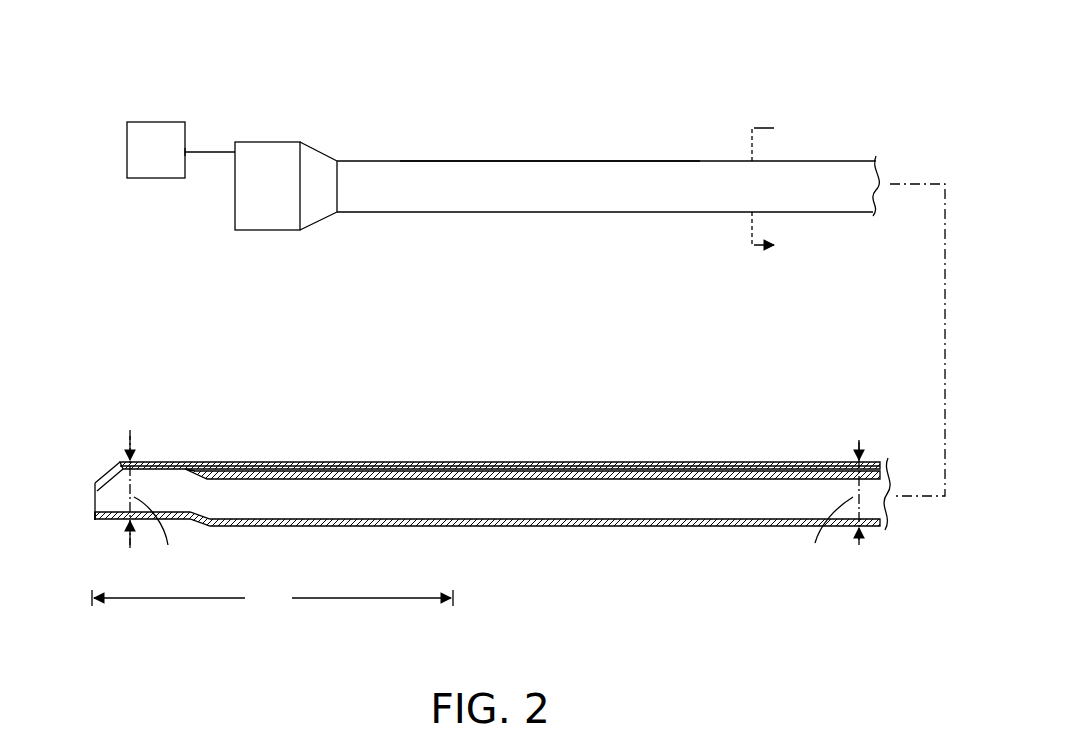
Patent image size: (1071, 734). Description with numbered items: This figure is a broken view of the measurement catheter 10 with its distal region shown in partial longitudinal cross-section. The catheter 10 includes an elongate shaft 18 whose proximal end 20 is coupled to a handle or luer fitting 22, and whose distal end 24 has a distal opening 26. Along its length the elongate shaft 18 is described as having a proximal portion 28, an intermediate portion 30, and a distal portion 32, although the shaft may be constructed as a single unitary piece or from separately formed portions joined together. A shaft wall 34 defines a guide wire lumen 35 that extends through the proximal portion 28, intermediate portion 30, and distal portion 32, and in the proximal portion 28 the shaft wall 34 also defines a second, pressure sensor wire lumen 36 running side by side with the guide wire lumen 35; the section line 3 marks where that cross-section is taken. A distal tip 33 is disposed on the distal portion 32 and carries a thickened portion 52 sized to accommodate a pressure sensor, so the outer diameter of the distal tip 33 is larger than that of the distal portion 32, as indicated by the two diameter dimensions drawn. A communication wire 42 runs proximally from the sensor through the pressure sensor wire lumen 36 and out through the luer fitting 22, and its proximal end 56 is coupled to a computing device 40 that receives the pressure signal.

The measurement catheter 10 is at (503, 150).
The elongate shaft 18 is at (578, 213).
The proximal end 20 is at (337, 214).
The luer fitting 22 is at (290, 141).
The proximal portion 28 is at (514, 158).
The computing device 40 is at (155, 122).
The communication wire 42 is at (215, 150).
The proximal end of communication wire 56 is at (186, 149).
The line 3- 3 is at (773, 187).
The distal end 24 is at (96, 521).
The distal opening 26 is at (95, 486).
The intermediate portion 30 is at (459, 483).
The distal portion 32 is at (459, 466).
The distal tip 33 is at (152, 458).
The shaft wall 34 is at (528, 527).
The guide wire lumen 35 is at (318, 498).
The pressure sensor wire lumen 36 is at (246, 467).
The thickened portion 52 is at (190, 459).